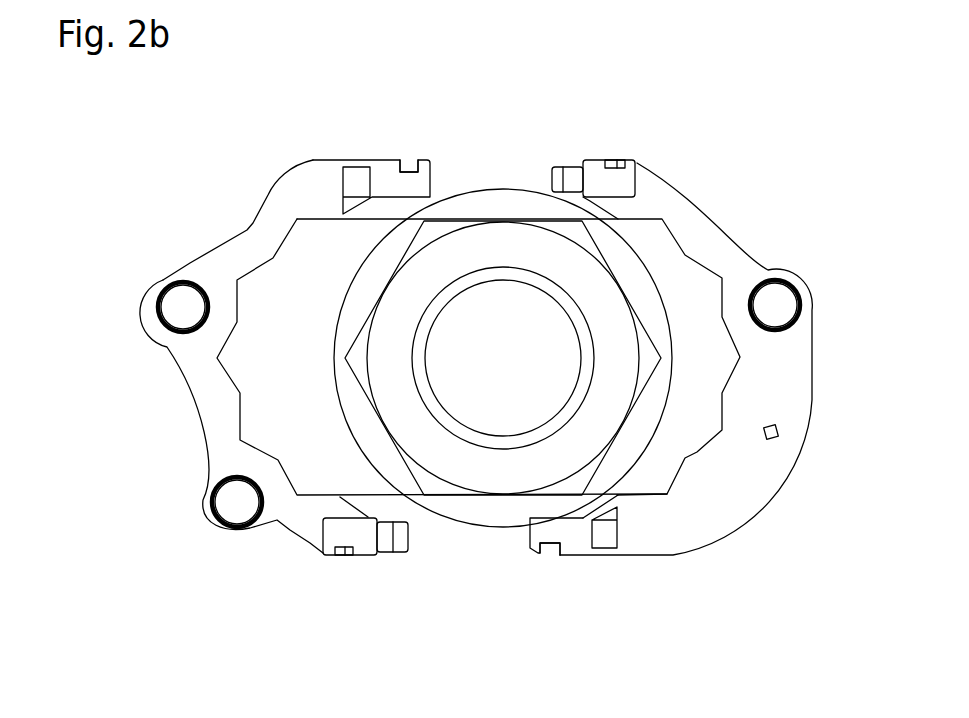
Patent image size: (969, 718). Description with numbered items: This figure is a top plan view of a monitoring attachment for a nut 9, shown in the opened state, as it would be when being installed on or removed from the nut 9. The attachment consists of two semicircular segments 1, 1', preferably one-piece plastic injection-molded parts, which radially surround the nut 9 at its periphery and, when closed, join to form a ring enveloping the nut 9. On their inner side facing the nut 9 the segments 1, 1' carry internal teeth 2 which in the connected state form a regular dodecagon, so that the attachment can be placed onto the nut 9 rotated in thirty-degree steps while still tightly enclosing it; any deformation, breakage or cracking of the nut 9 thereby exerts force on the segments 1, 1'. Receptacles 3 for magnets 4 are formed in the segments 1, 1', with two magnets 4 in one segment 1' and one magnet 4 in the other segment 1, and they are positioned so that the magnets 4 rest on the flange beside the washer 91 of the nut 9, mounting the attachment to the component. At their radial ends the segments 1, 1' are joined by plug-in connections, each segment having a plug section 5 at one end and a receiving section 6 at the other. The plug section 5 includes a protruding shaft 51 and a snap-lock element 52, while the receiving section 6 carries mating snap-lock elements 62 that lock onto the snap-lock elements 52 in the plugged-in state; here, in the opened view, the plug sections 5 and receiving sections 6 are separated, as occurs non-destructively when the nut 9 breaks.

The semicircular segment 1 is at (476, 333).
The semicircular segment 1' is at (224, 218).
The internal teeth 2 is at (223, 378).
The receptacle 3 is at (160, 287).
The magnet 4 is at (187, 307).
The plug section 5 is at (580, 113).
The shaft 51 is at (563, 157).
The snap-lock element 52 is at (618, 157).
The receiving section 6 is at (398, 137).
The mating snap-lock element 62 is at (417, 157).
The nut 9 is at (408, 293).
The washer 91 is at (633, 447).